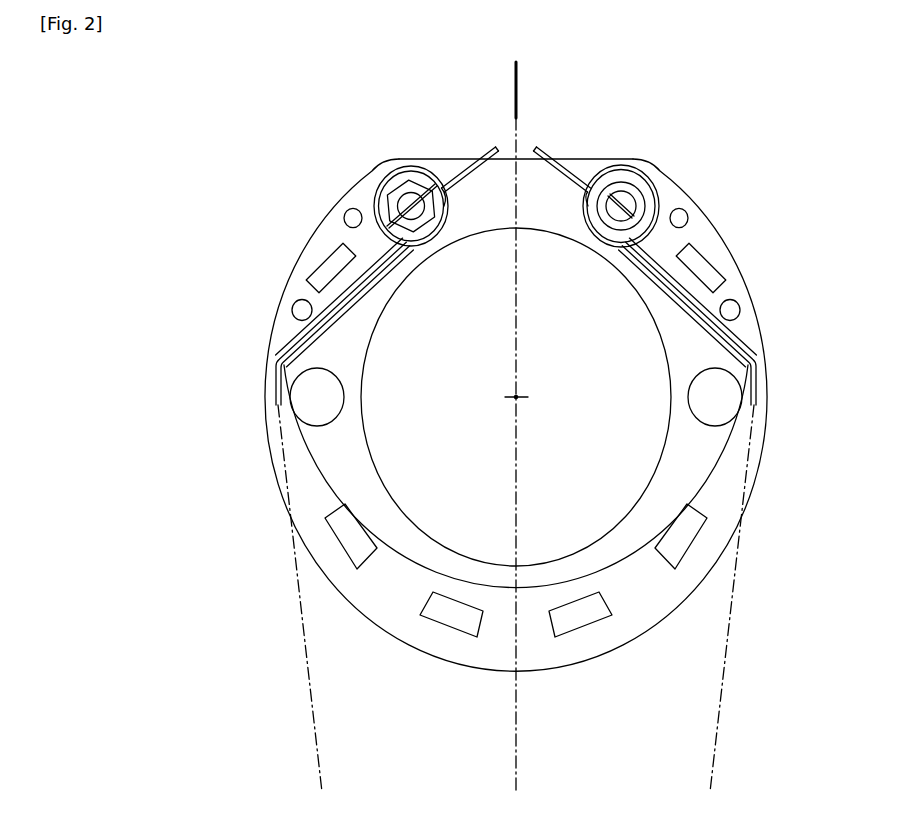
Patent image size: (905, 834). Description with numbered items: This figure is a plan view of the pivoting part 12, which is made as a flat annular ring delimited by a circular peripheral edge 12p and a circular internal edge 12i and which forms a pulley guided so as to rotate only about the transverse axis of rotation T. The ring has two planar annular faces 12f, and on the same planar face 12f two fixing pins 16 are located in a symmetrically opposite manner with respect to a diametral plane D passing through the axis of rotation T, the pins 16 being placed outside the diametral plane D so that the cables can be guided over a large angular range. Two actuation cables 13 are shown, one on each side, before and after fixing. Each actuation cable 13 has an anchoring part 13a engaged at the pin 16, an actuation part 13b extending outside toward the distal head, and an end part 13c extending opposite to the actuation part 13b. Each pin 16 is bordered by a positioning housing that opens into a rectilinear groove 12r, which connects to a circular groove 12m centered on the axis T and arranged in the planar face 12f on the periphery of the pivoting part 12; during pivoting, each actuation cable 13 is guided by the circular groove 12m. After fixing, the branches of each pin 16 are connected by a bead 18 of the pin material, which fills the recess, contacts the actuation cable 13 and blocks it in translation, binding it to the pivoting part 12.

The pivoting part 12 is at (786, 402).
The circular internal edge 12i is at (383, 474).
The circular peripheral edge 12p is at (765, 440).
The planar annular face 12f is at (316, 466).
The circular groove 12m is at (308, 525).
The rectilinear groove 12r is at (290, 346).
The actuation cable 13 is at (318, 752).
The anchoring part 13a is at (438, 238).
The actuation part 13b is at (278, 362).
The end part 13c is at (472, 168).
The fixing pin 16 is at (395, 176).
The bead 18 is at (650, 198).
The diametral plane D is at (518, 86).
The transverse axis of rotation T is at (519, 399).